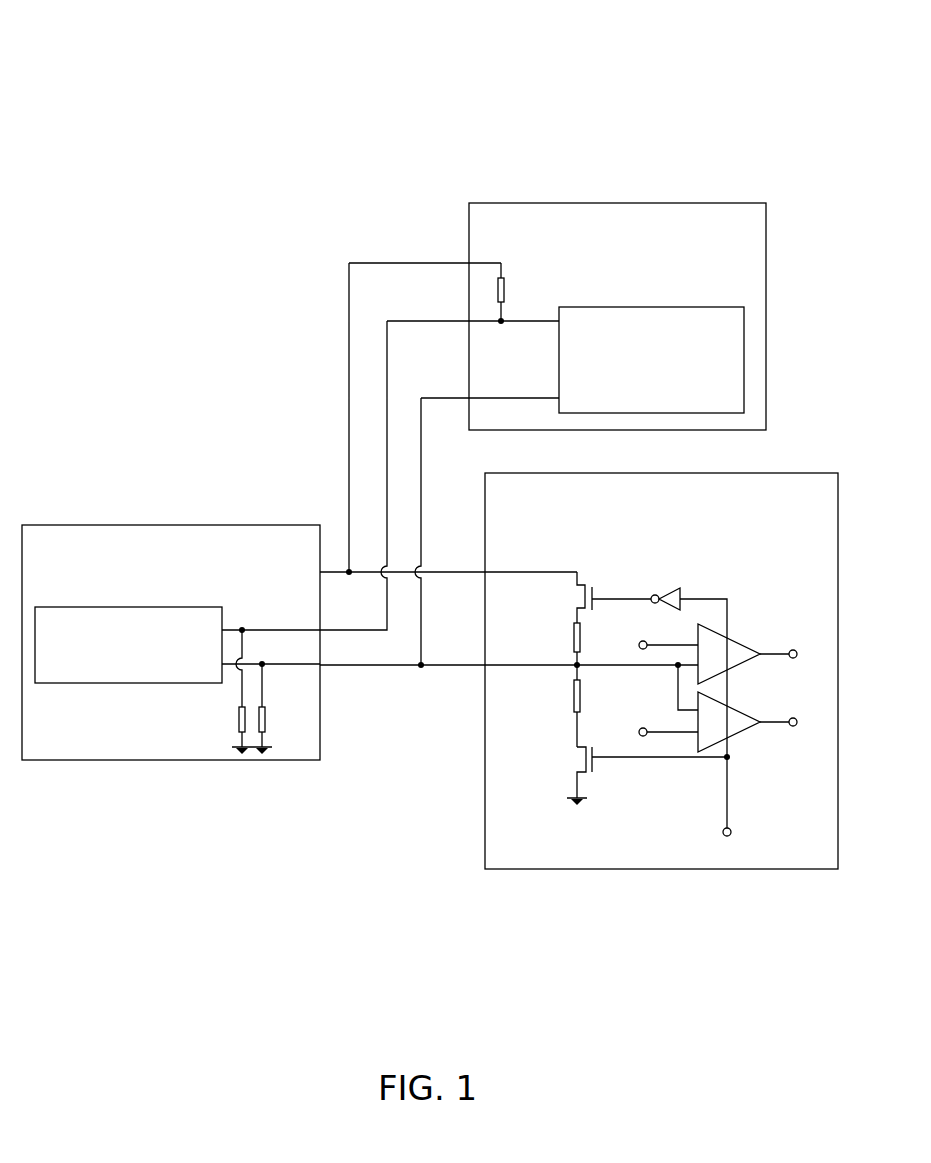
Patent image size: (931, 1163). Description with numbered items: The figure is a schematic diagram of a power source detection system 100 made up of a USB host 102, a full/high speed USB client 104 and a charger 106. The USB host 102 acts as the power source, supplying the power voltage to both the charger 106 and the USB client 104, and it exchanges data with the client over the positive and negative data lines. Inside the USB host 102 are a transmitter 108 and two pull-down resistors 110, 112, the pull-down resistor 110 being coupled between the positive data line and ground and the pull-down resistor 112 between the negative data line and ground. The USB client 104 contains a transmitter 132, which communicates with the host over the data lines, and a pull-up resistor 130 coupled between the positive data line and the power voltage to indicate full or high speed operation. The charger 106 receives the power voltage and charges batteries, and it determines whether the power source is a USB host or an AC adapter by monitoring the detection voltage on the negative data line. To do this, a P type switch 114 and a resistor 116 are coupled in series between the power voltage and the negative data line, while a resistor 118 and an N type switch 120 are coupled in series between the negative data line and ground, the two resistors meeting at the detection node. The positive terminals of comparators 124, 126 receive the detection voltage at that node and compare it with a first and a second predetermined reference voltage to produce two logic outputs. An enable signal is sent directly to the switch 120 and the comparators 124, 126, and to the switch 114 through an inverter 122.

The power source detection system 100 is at (118, 75).
The USB host 102 is at (130, 525).
The USB client 104 is at (557, 204).
The charger 106 is at (662, 473).
The transmitter 108 is at (128, 607).
The pull-down resistor 110 is at (239, 722).
The pull-down resistor 112 is at (265, 722).
The switch 114 is at (579, 595).
The resistor 116 is at (575, 640).
The resistor 118 is at (575, 695).
The switch 120 is at (579, 762).
The inverter 122 is at (680, 588).
The comparator 124 is at (740, 640).
The comparator 126 is at (740, 708).
The pull-up resistor 130 is at (507, 300).
The transmitter 132 is at (620, 307).